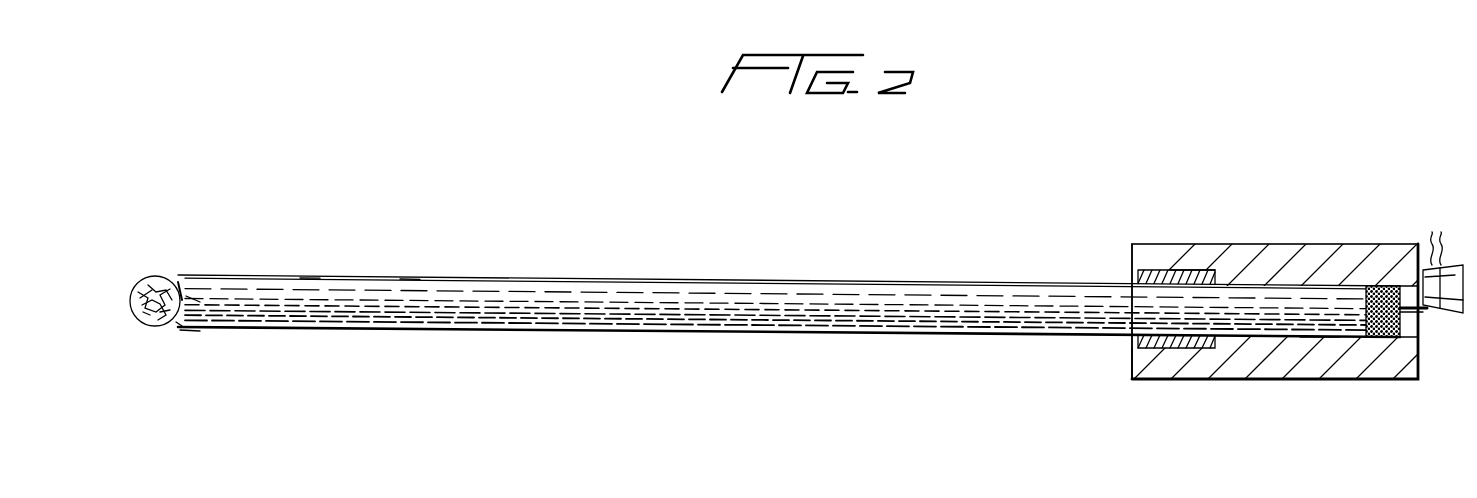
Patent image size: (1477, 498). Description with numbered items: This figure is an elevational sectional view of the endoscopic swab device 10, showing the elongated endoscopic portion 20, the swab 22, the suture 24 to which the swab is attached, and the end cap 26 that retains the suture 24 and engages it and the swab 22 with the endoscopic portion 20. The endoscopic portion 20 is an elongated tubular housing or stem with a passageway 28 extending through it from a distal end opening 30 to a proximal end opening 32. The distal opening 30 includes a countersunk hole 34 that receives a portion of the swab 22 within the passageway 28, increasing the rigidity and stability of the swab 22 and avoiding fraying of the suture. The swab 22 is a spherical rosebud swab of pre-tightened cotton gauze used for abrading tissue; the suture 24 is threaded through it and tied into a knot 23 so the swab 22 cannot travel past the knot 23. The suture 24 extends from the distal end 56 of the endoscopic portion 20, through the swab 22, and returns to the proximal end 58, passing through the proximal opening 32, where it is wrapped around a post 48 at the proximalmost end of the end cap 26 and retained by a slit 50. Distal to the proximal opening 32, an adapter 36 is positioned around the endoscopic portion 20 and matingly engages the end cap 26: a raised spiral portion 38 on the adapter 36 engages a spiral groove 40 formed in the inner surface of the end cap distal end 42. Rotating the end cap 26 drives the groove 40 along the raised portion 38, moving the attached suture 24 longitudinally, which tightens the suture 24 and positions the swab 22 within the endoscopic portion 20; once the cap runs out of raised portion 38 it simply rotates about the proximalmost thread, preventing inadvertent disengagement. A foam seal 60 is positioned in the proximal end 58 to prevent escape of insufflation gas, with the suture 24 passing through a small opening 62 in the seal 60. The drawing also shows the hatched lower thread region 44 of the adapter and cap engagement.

The endoscopic swab device 10 is at (603, 230).
The endoscopic portion 20 is at (728, 280).
The swab 22 is at (150, 279).
The knot 23 is at (187, 300).
The suture 24 is at (317, 300).
The end cap 26 is at (1263, 253).
The passageway 28 is at (402, 292).
The distal end opening 30 is at (181, 300).
The proximal end opening 32 is at (1418, 336).
The countersunk hole 34 is at (173, 326).
The adapter 36 is at (1133, 278).
The raised spiral portion 38 is at (1155, 270).
The spiral groove 40 is at (1183, 272).
The end cap distal end 42 is at (1142, 367).
The lower thread 44 is at (1215, 343).
The post 48 is at (1447, 268).
The slit 50 is at (1462, 307).
The distal end 56 is at (183, 330).
The proximal end 58 is at (1317, 340).
The foam seal 60 is at (1373, 286).
The small opening 62 is at (1382, 340).